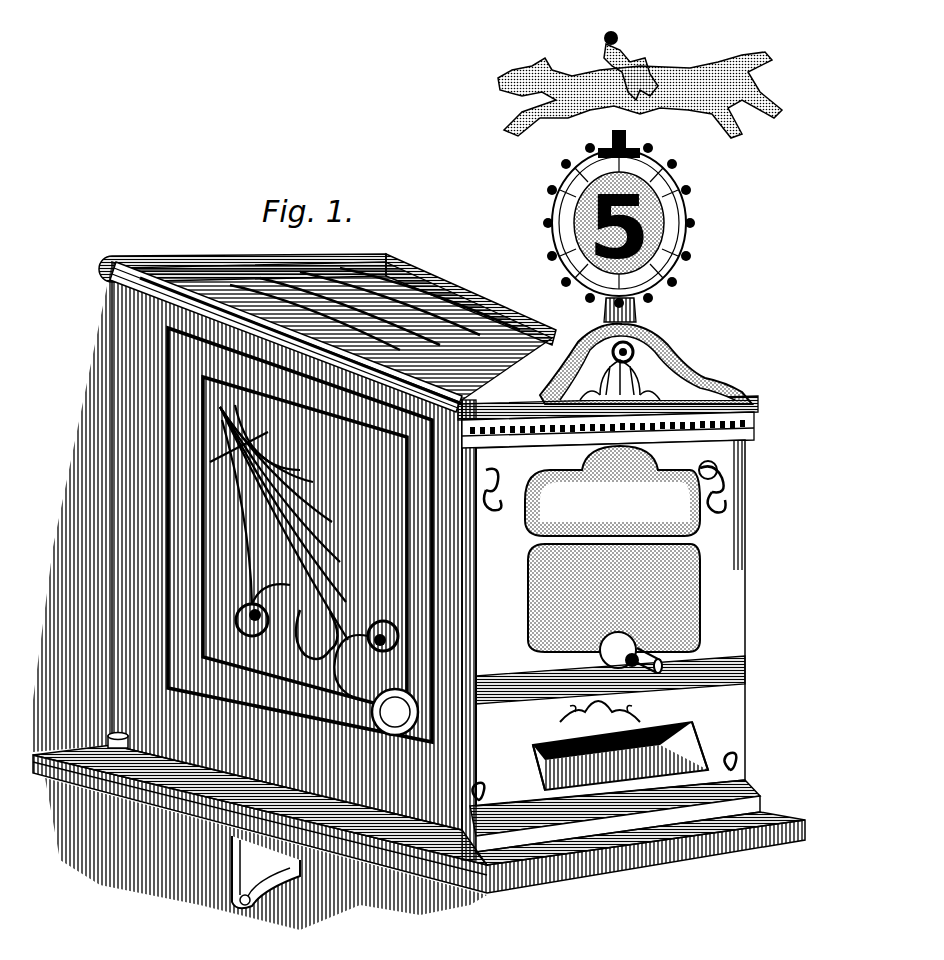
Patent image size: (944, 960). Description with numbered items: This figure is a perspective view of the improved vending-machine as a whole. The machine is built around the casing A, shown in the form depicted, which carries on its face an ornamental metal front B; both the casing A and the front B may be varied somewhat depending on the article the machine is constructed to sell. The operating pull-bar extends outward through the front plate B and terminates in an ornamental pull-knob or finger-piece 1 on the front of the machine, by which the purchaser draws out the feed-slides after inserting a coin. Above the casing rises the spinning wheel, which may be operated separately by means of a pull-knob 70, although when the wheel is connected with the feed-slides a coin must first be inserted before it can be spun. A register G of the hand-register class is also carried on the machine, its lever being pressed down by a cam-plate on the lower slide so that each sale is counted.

The casing A is at (128, 726).
The ornamental metal front B is at (609, 628).
The register G is at (287, 546).
The pull-knob 70 is at (648, 330).
The pull knob 1 is at (645, 662).